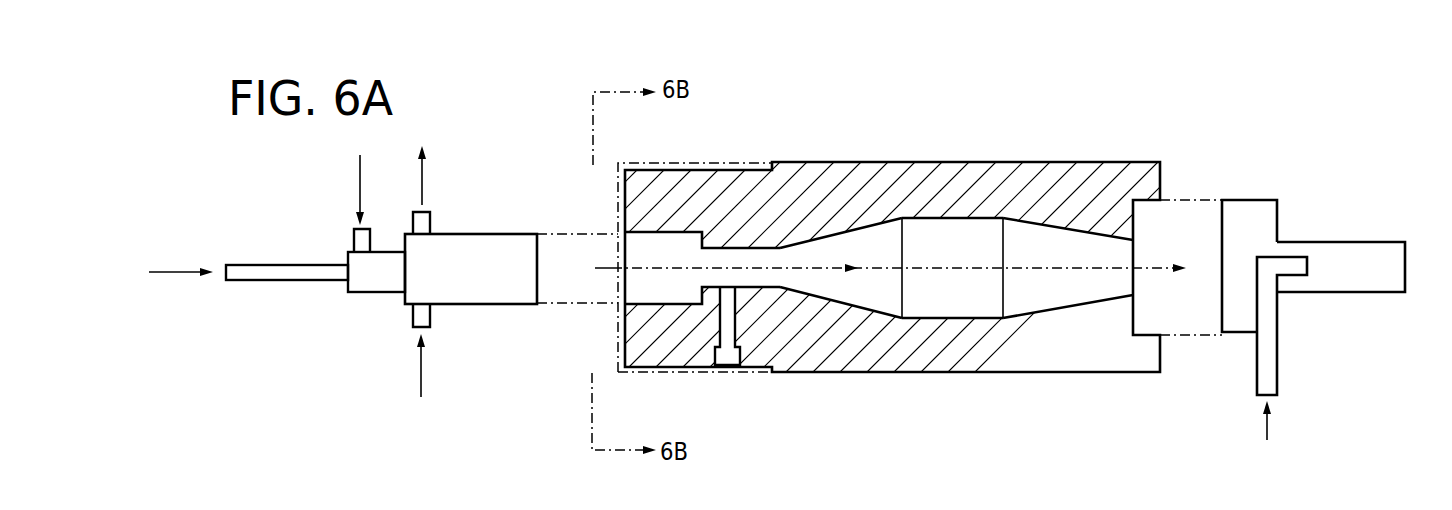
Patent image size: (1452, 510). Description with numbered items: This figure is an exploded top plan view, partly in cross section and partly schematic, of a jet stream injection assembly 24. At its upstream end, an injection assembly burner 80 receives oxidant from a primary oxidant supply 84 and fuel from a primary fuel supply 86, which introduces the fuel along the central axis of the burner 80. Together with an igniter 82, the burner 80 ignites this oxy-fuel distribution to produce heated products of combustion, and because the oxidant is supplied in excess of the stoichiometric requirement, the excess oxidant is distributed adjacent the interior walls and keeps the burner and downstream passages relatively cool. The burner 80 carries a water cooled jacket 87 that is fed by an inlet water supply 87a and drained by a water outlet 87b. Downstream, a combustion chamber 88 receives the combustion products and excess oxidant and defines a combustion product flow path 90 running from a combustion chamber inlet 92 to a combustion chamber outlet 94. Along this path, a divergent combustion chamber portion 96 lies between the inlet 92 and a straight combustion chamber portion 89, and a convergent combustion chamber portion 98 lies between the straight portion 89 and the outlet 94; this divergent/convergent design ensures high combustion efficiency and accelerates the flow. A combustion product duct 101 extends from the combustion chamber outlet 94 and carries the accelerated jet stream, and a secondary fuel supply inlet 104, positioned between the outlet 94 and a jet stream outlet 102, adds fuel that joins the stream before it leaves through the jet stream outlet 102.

The jet stream injection assembly 24 is at (1084, 157).
The injection assembly burner 80 is at (336, 324).
The igniter 82 is at (742, 362).
The primary oxidant supply 84 is at (360, 175).
The primary fuel supply 86 is at (170, 271).
The water cooled jacket 87 is at (470, 304).
The inlet water supply 87a is at (421, 380).
The water outlet 87b is at (422, 182).
The combustion chamber 88 is at (963, 254).
The straight combustion chamber portion 89 is at (963, 301).
The combustion product flow path 90 is at (917, 268).
The combustion chamber inlet 92 is at (823, 250).
The combustion chamber outlet 94 is at (1130, 256).
The divergent combustion chamber portion 96 is at (885, 302).
The convergent combustion chamber portion 98 is at (1045, 301).
The combustion product duct 101 is at (1312, 223).
The jet stream outlet 102 is at (1363, 242).
The secondary fuel supply inlet 104 is at (1277, 357).